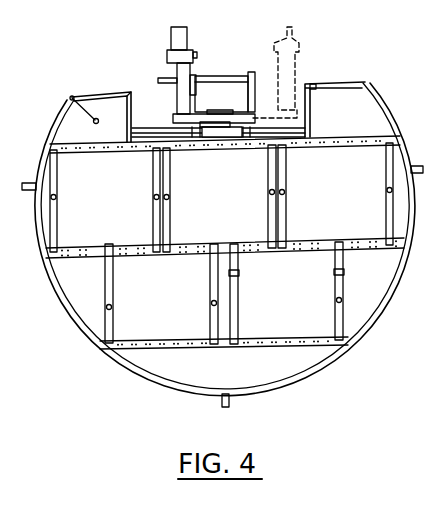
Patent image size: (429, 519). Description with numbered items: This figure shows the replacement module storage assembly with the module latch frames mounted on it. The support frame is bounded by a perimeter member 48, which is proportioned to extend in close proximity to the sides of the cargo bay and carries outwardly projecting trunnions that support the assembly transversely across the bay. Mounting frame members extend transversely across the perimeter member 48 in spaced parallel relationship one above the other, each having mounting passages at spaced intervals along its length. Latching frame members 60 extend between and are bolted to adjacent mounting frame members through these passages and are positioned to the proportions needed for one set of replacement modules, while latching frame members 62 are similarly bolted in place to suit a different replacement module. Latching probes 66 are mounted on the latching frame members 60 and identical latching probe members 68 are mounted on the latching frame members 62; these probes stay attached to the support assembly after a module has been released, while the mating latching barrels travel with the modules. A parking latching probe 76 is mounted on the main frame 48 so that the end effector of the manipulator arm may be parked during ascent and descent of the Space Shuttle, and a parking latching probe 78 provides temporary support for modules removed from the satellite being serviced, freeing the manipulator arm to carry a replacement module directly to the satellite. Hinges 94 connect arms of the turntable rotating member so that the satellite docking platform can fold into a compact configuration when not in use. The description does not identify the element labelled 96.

The perimeter member 48 is at (73, 326).
The latching frame members 60 is at (158, 220).
The latching frame members 62 is at (337, 312).
The latching probes 66 is at (157, 192).
The latching probe members 68 is at (335, 266).
The parking latching probe 76 is at (71, 97).
The parking latching probe 78 is at (317, 86).
The hinges 94 is at (257, 117).
The actuator cylinder 96 is at (226, 76).